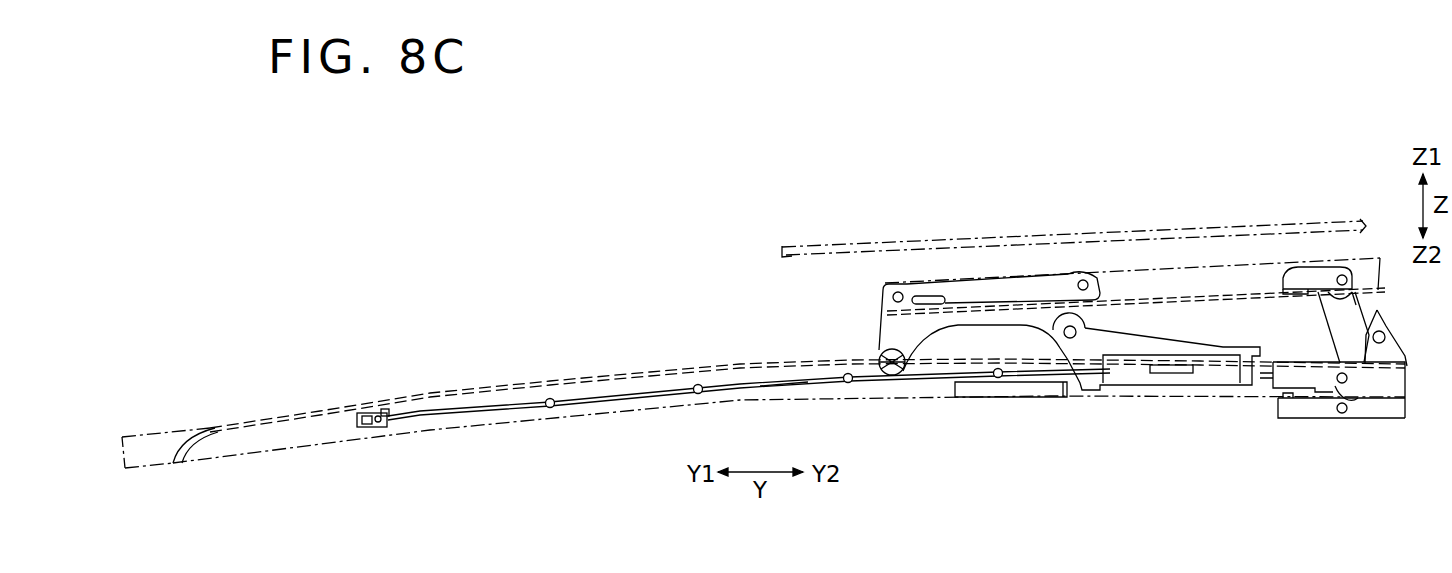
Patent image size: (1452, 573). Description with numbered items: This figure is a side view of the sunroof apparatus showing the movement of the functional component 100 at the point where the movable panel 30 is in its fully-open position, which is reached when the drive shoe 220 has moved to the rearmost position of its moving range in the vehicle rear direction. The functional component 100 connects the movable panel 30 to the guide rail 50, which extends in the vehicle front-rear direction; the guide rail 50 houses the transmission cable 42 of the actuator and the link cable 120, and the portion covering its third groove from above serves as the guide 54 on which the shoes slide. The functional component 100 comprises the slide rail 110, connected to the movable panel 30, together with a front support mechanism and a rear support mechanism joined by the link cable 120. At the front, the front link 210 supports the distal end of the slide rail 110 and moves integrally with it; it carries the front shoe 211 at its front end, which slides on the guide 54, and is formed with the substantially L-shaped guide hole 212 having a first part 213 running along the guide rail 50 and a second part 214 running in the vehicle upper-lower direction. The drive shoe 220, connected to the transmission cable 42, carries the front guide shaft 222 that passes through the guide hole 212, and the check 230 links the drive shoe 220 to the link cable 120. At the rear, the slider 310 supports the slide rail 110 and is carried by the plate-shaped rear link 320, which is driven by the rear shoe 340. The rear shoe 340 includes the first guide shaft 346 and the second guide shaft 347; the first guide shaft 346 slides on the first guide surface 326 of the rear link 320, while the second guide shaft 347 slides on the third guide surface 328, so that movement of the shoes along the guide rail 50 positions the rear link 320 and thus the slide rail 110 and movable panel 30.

The functional component 100 is at (242, 307).
The guide 54 is at (195, 449).
The guide rail 50 is at (551, 408).
The link cable 120 is at (808, 382).
The check 230 is at (372, 428).
The movable panel 30 is at (788, 240).
The slide rail 110 is at (1174, 265).
The guide hole 212 is at (931, 298).
The first part 213 is at (965, 251).
The front link 210 is at (1100, 290).
The front shoe 211 is at (885, 340).
The second part 214 is at (1095, 320).
The front guide shaft 222 is at (1062, 343).
The drive shoe 220 is at (1076, 391).
The transmission cable 42 is at (980, 398).
The slider 310 is at (1284, 272).
The first guide surface 326 is at (1318, 321).
The third guide surface 328 is at (1368, 309).
The second guide shaft 347 is at (1386, 339).
The rear shoe 340 is at (1325, 392).
The first guide shaft 346 is at (1352, 392).
The rear link 320 is at (1382, 398).